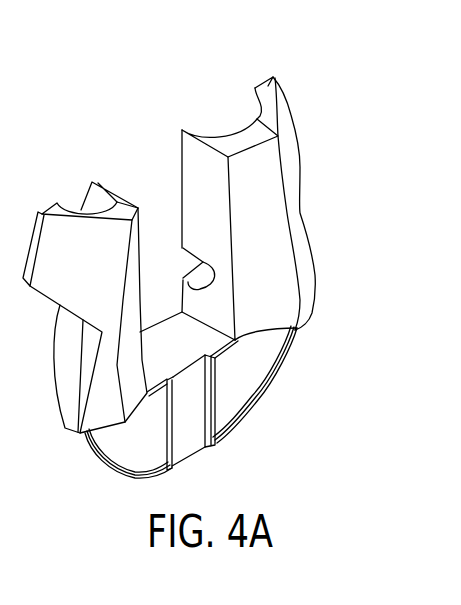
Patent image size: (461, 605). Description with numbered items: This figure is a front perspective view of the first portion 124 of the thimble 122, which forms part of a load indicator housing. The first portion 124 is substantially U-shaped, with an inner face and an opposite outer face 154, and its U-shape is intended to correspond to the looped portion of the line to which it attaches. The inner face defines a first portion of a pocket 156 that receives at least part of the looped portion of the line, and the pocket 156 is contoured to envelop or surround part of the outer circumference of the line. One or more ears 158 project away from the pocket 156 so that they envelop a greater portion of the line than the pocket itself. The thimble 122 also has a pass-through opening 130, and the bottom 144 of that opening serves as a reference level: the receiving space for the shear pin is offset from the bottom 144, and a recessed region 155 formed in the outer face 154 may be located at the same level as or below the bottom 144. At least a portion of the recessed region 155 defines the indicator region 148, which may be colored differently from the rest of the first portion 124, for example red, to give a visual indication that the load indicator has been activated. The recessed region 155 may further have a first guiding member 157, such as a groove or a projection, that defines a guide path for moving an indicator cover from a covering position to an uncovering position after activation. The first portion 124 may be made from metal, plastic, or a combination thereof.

The thimble 122 is at (316, 70).
The first portion 124 is at (310, 169).
The pass-through opening 130 is at (135, 150).
The bottom 144 is at (192, 352).
The indicator region 148 is at (257, 367).
The outer face 154 is at (270, 263).
The recessed region 155 is at (93, 474).
The pocket 156 is at (229, 112).
The first guiding member 157 is at (188, 413).
The ears 158 is at (262, 80).